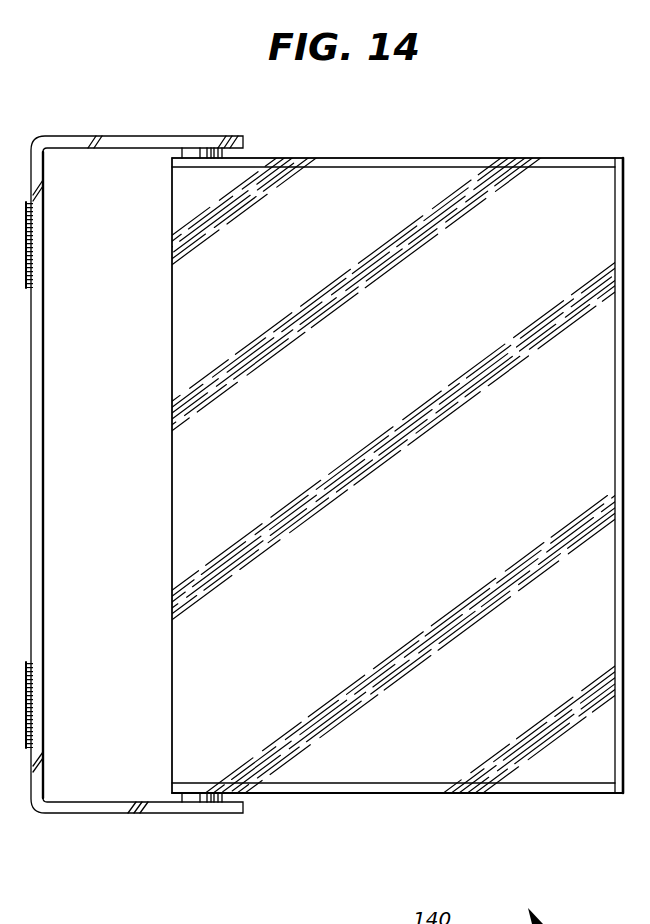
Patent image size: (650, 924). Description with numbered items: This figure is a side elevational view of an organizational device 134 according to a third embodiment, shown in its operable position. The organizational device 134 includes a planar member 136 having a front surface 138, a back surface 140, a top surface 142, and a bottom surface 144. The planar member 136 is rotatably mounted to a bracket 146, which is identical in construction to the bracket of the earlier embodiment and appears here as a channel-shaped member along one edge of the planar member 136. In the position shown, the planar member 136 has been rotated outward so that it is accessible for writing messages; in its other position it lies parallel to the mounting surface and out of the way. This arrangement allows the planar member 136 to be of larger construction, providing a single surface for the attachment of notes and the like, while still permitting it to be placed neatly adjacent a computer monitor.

The organizational device 134 is at (256, 119).
The planar member 136 is at (440, 161).
The front surface 138 is at (348, 757).
The back surface 140 is at (475, 730).
The top surface 142 is at (538, 160).
The bottom surface 144 is at (537, 795).
The bracket 146 is at (101, 822).